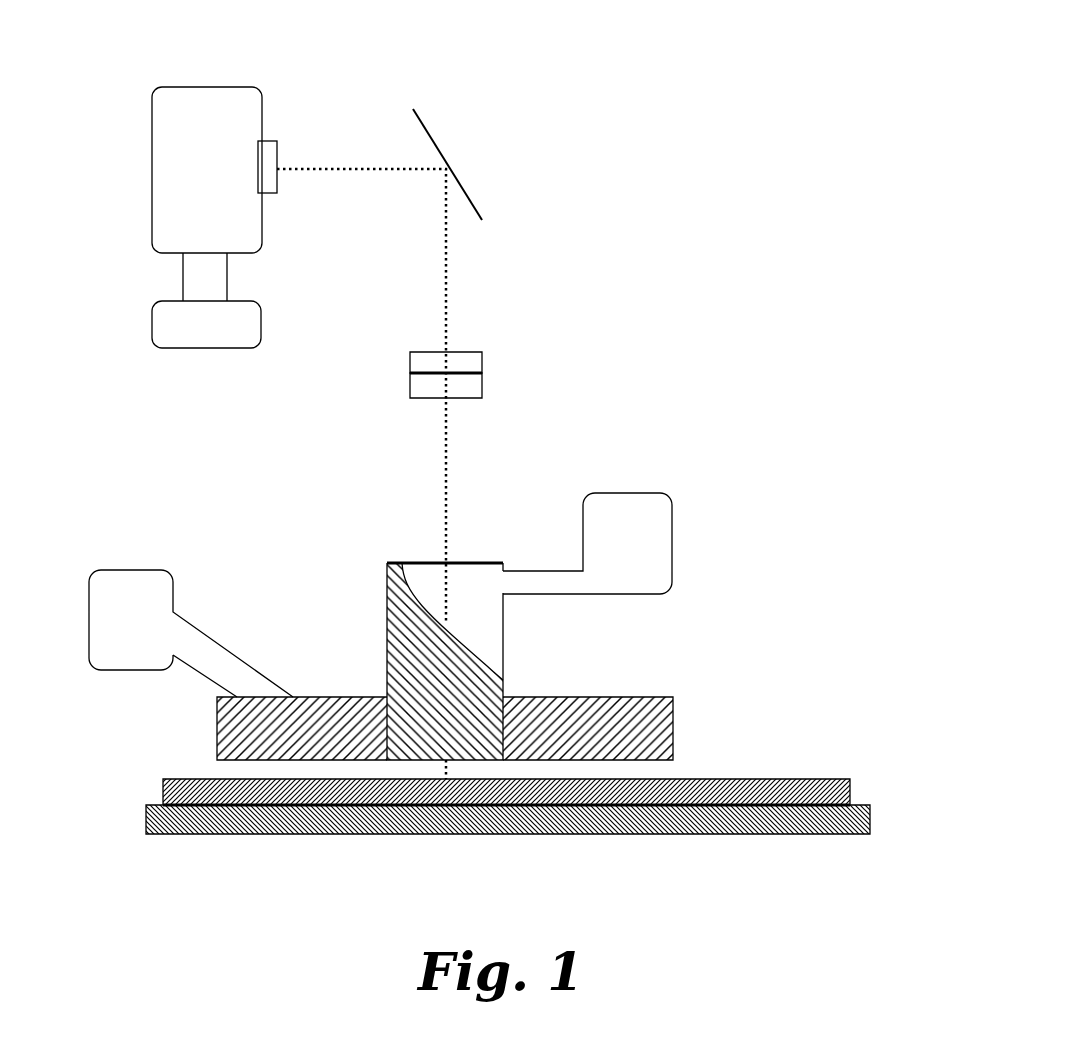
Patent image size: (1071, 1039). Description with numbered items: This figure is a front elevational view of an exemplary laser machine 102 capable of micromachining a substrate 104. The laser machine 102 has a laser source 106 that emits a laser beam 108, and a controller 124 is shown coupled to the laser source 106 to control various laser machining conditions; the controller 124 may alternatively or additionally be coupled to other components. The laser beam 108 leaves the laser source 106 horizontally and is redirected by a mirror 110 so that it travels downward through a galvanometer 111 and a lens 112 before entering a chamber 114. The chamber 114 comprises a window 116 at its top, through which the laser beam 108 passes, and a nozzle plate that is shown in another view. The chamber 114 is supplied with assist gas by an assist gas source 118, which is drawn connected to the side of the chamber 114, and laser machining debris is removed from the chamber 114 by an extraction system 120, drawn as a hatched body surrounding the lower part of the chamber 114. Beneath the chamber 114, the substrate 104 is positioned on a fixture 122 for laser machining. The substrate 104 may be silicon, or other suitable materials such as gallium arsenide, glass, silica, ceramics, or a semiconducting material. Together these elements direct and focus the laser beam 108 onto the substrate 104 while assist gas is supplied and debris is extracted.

The laser machine 102 is at (674, 45).
The substrate 104 is at (856, 792).
The laser source 106 is at (214, 170).
The laser beam 108 is at (449, 288).
The mirror 110 is at (430, 135).
The galvanometer 111 is at (482, 352).
The lens 112 is at (482, 392).
The chamber 114 is at (384, 607).
The window 116 is at (463, 562).
The assist gas source 118 is at (587, 543).
The extraction system 120 is at (381, 665).
The fixture 122 is at (142, 814).
The controller 124 is at (206, 300).